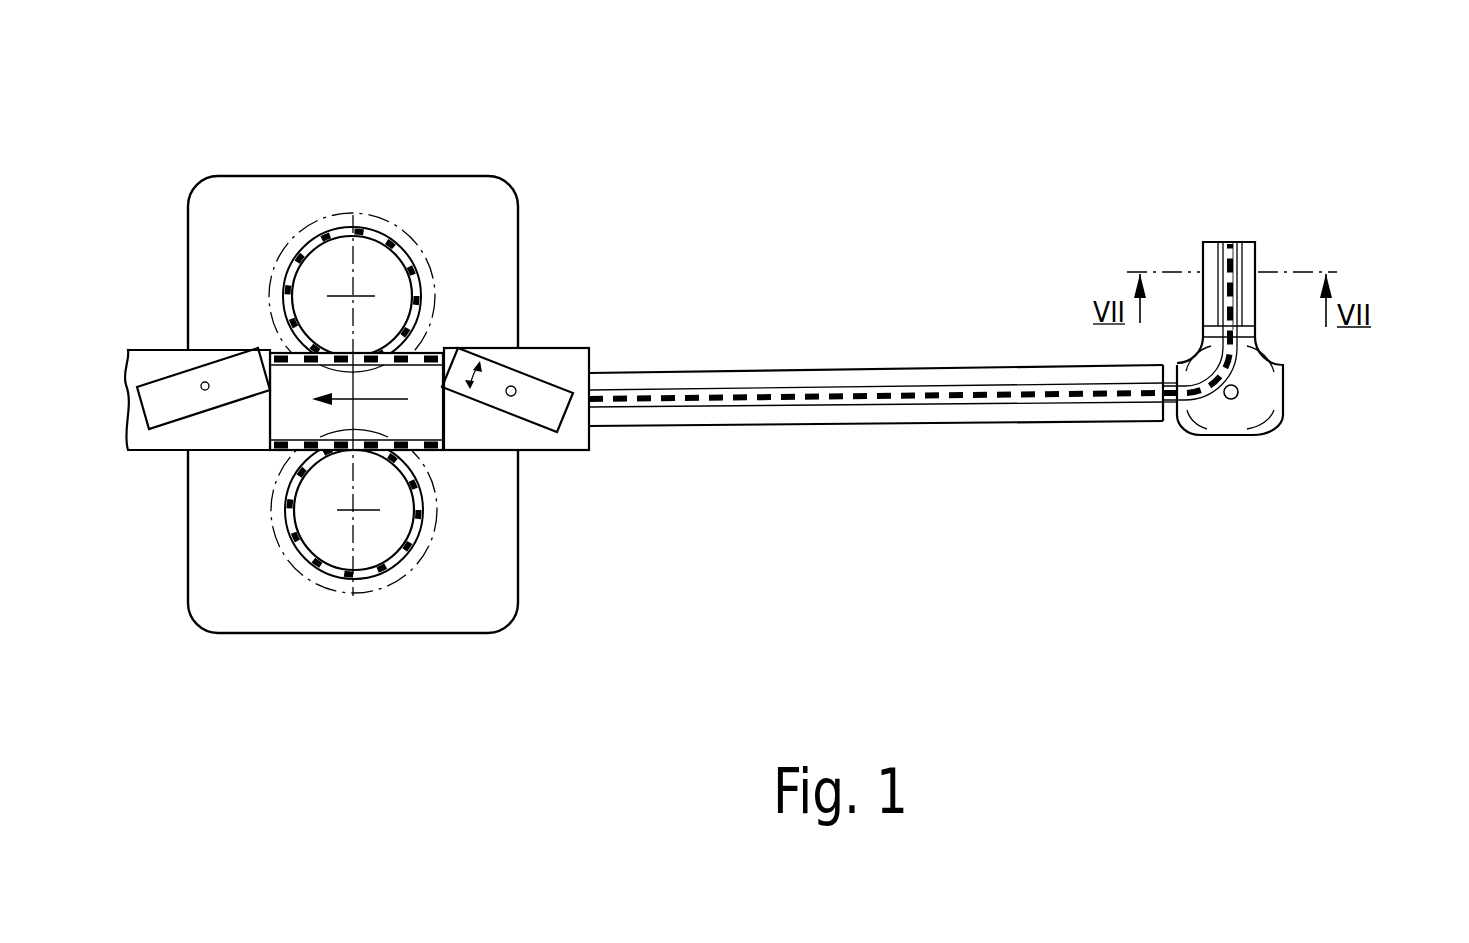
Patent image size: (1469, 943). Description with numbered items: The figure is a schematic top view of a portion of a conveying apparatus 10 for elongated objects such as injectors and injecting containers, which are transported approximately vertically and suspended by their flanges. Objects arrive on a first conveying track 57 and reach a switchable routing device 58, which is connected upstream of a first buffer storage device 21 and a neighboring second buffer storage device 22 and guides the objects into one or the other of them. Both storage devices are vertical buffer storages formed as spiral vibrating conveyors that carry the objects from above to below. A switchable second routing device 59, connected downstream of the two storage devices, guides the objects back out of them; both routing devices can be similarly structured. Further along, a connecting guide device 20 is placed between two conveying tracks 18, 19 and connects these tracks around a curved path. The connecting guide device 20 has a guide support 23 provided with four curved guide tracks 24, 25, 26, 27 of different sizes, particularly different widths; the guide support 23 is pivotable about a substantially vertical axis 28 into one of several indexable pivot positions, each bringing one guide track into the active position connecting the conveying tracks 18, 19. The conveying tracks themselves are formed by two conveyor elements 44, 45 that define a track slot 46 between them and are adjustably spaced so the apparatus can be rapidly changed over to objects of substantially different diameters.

The conveying apparatus 10 is at (557, 330).
The conveying track 18 is at (1212, 267).
The conveying track 19 is at (1115, 408).
The connecting guide device 20 is at (1191, 451).
The first buffer storage device 21 is at (374, 275).
The second buffer storage device 22 is at (364, 533).
The guide support 23 is at (1283, 365).
The curved guide track 24 is at (1190, 367).
The curved guide track 25 is at (1200, 415).
The curved guide track 26 is at (1267, 422).
The curved guide track 27 is at (1257, 380).
The vertical axis 28 is at (1231, 399).
The conveyor element 44 is at (880, 385).
The conveyor element 45 is at (1242, 242).
The track slot 46 is at (1226, 242).
The first conveying track 57 is at (637, 410).
The routing device 58 is at (502, 412).
The second routing device 59 is at (213, 411).